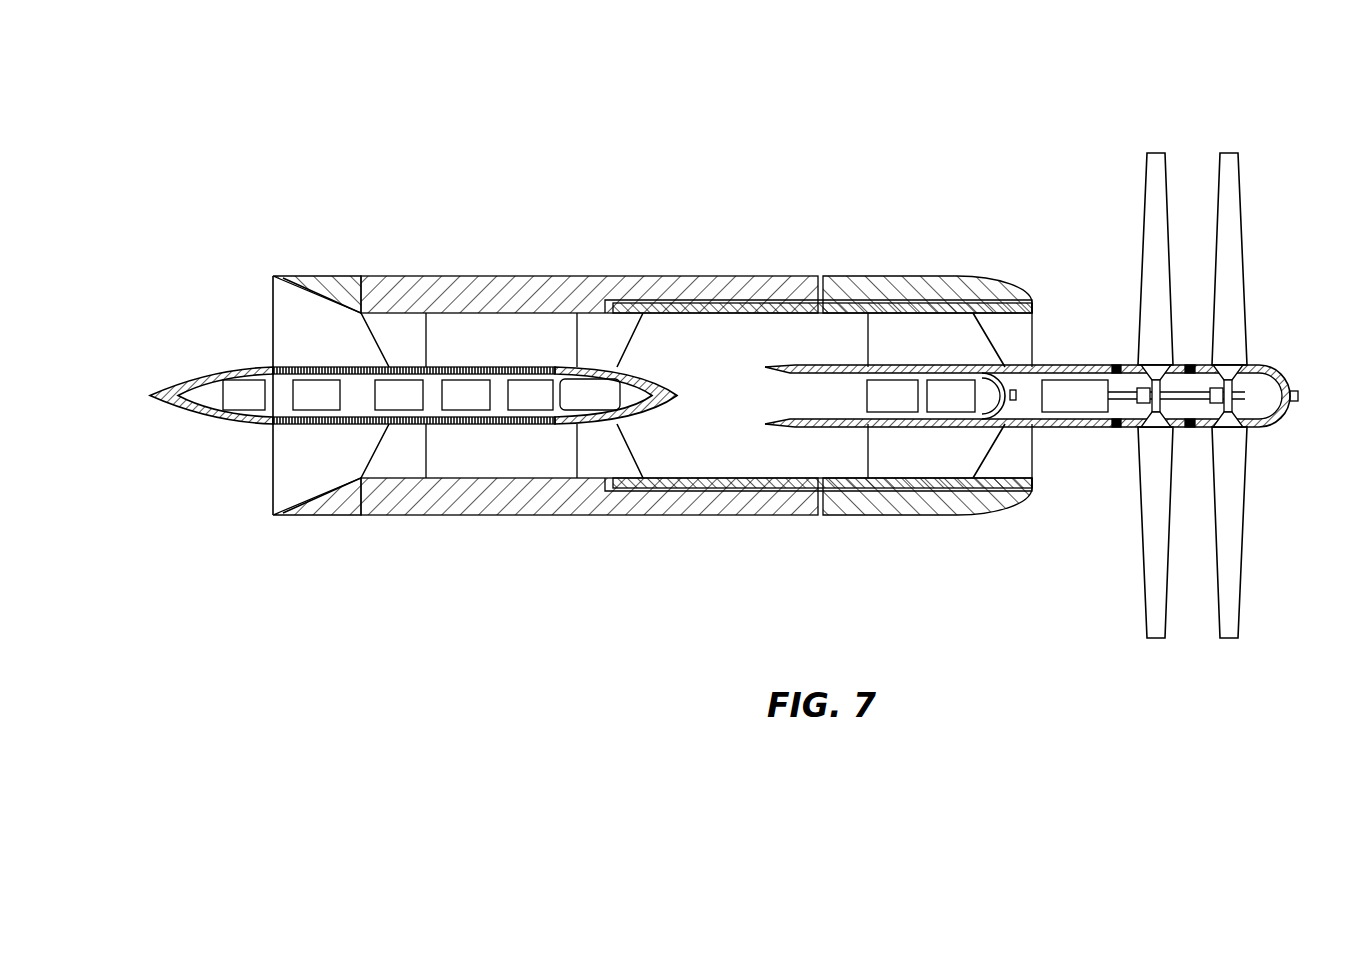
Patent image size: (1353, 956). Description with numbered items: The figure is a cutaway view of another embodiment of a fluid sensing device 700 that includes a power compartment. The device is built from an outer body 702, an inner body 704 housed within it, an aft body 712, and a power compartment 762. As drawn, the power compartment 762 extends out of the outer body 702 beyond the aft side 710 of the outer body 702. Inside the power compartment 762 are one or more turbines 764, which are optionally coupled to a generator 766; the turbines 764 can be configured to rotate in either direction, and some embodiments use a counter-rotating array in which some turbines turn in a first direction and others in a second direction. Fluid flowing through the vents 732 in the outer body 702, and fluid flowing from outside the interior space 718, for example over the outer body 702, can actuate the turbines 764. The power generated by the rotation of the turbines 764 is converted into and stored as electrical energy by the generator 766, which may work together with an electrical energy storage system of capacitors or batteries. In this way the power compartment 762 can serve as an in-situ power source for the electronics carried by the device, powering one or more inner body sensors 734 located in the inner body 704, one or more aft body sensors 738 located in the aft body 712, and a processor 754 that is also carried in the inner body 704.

The fluid sensing device 700 is at (334, 158).
The outer body 702 is at (527, 277).
The inner body 704 is at (436, 435).
The aft side 710 is at (1041, 303).
The aft body 712 is at (973, 517).
The interior space 718 is at (704, 348).
The vents 732 is at (845, 335).
The inner body sensors 734 is at (475, 405).
The aft body sensors 738 is at (900, 402).
The processor 754 is at (615, 402).
The power compartment 762 is at (1031, 401).
The turbines 764 is at (1164, 166).
The generator 766 is at (1075, 387).